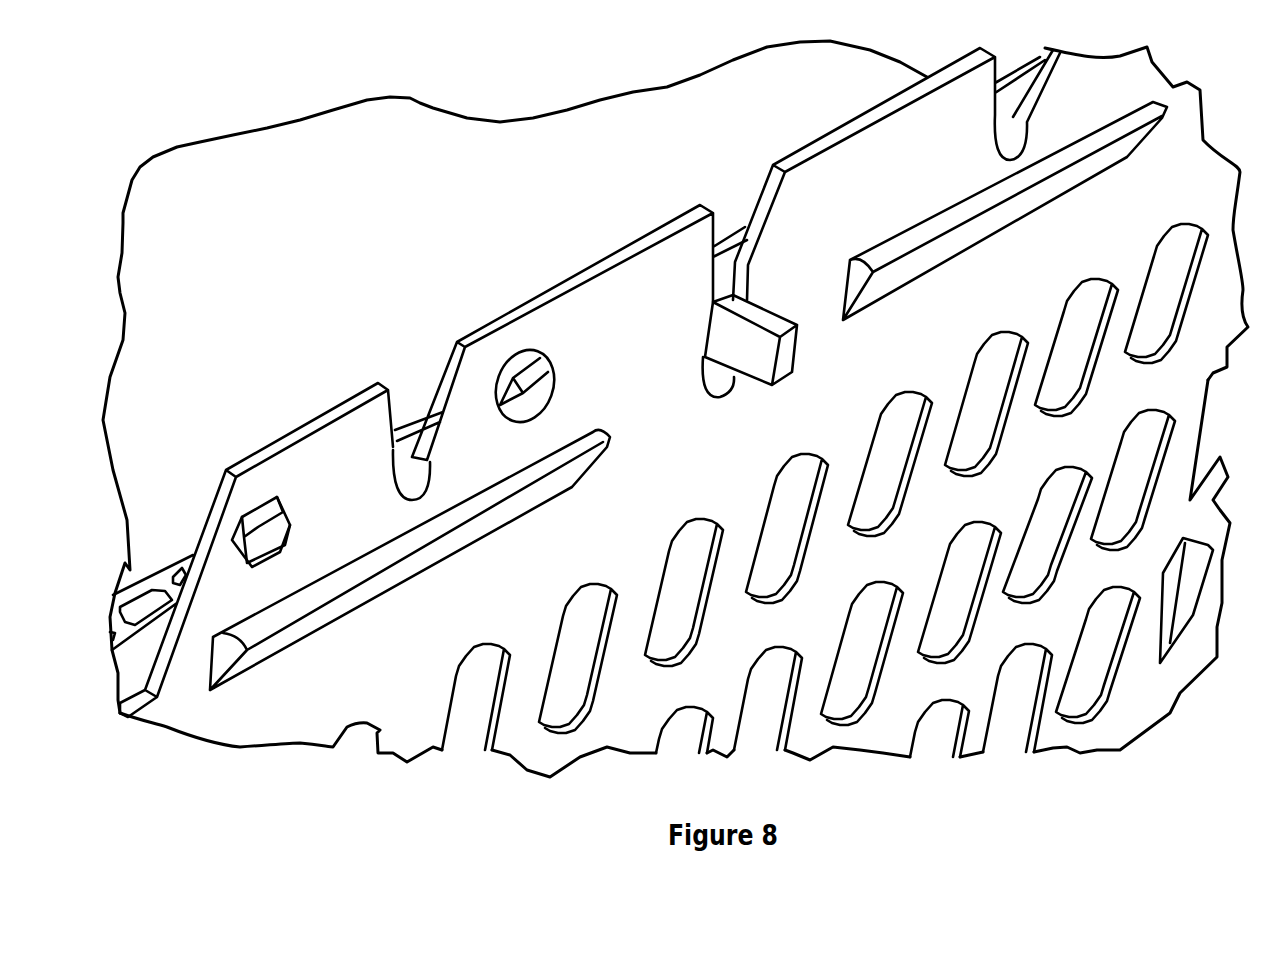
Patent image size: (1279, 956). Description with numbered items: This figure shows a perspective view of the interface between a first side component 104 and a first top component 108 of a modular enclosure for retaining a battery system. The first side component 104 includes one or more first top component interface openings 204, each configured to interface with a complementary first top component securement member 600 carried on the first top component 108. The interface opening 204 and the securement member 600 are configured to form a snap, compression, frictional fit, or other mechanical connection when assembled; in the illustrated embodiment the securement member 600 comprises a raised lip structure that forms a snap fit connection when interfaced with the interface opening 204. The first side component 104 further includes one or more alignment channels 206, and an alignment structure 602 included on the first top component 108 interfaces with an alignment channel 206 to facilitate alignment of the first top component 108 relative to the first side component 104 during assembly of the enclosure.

The first side component 104 is at (547, 758).
The first top component 108 is at (222, 183).
The first top component interface opening 204 is at (215, 698).
The alignment channel 206 is at (687, 338).
The first top component securement member 600 is at (310, 627).
The alignment structure 602 is at (730, 335).